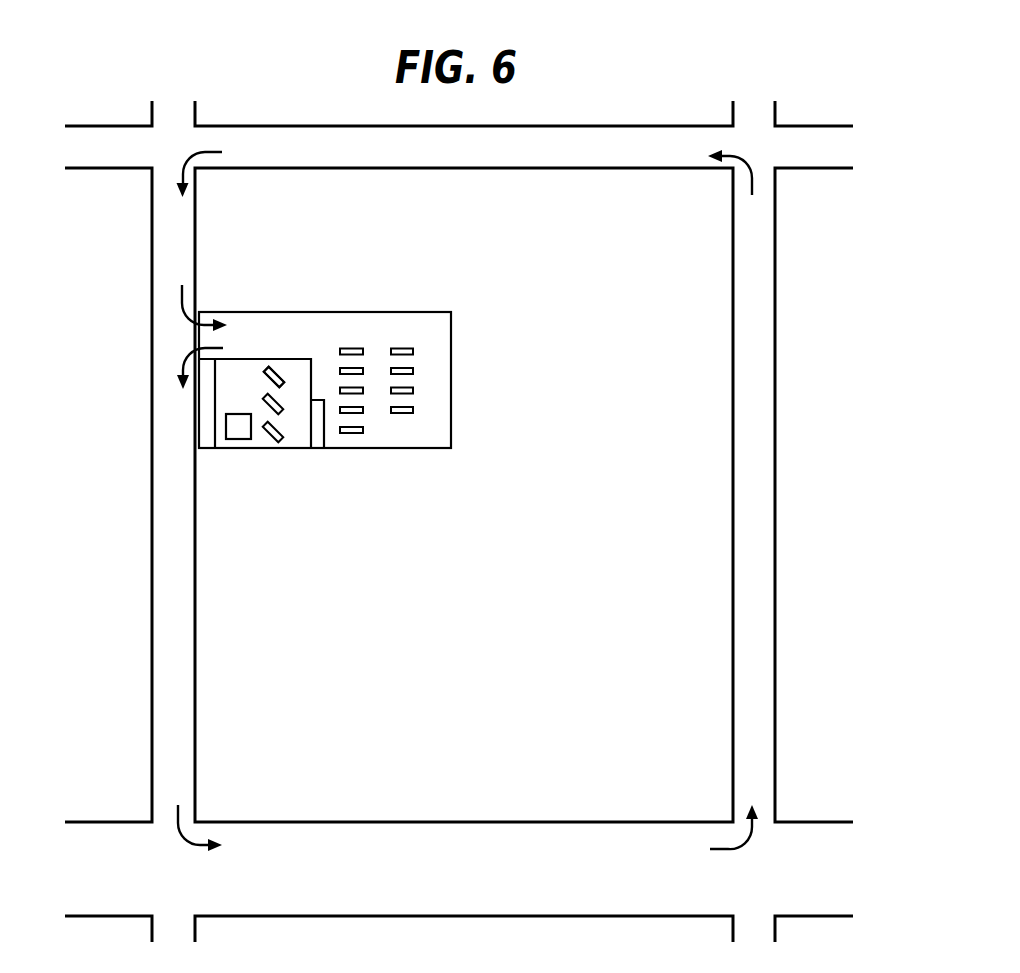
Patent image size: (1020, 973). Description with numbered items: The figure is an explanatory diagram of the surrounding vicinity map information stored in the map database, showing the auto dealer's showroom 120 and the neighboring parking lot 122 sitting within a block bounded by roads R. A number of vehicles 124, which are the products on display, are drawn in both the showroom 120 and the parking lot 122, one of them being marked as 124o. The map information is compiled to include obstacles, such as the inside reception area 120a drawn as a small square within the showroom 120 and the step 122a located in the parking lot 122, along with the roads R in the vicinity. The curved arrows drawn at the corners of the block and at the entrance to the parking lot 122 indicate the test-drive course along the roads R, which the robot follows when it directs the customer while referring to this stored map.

The roads R is at (471, 158).
The auto dealer's showroom 120 is at (253, 382).
The inside reception area 120a is at (234, 440).
The parking lot 122 is at (397, 337).
The step 122a is at (327, 433).
The vehicles 124 is at (283, 408).
The occupied parking space 124o is at (278, 371).